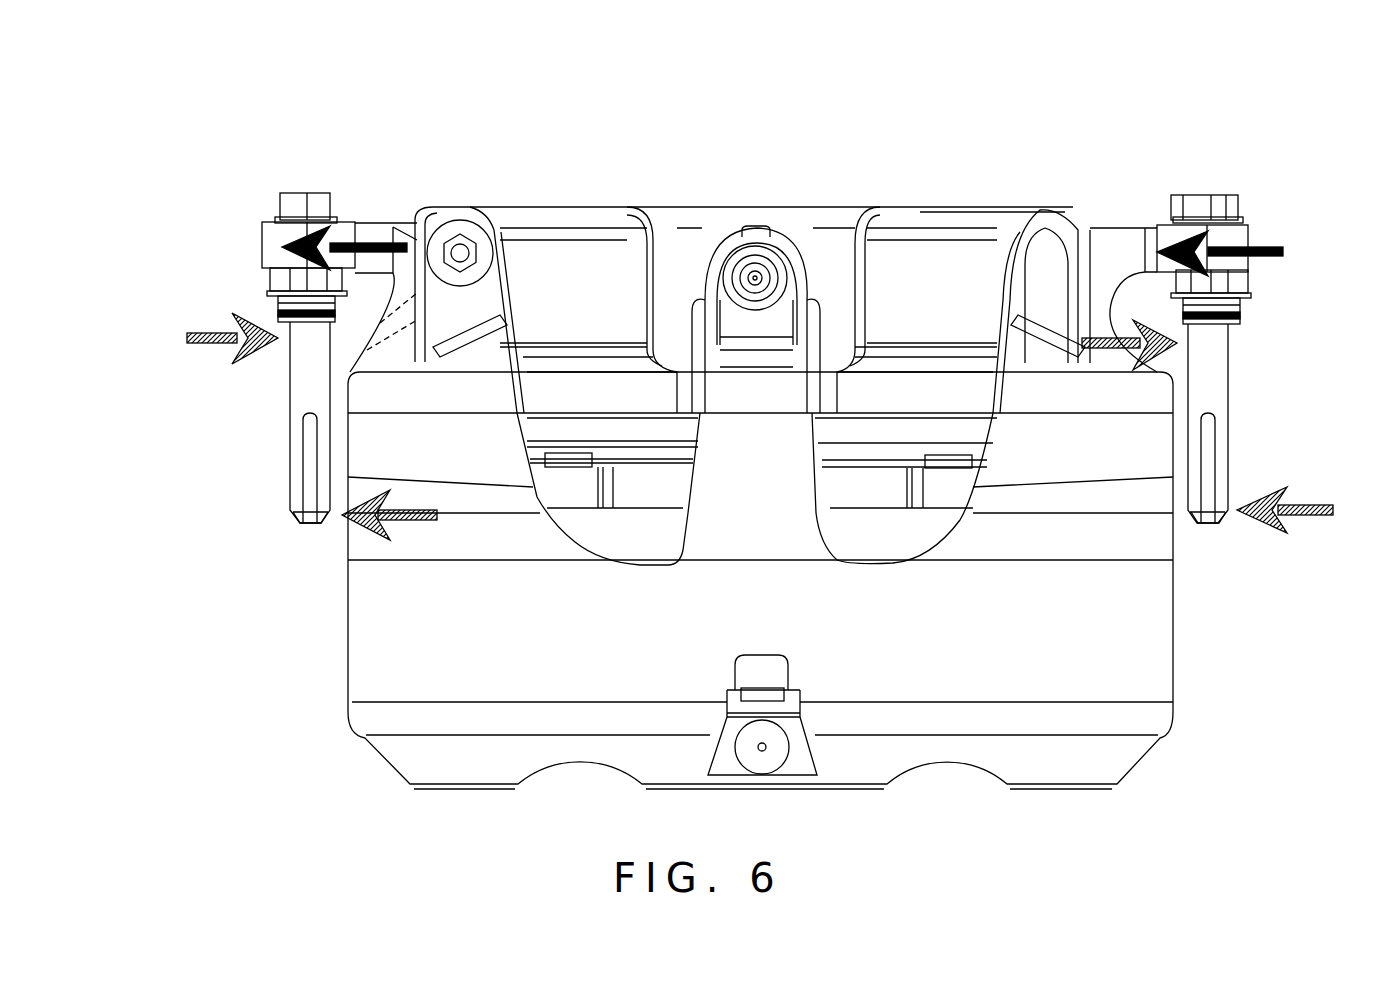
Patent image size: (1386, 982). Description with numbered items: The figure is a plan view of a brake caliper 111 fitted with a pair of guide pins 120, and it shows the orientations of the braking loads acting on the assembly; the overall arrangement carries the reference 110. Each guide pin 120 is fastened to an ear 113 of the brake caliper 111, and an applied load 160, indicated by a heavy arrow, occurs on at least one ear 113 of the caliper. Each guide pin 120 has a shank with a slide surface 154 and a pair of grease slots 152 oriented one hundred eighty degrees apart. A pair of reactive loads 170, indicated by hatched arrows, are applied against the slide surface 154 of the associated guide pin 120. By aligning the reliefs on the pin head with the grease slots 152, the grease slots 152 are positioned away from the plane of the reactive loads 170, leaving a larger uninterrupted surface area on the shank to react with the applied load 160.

The housing assembly 110 is at (968, 112).
The brake caliper 111 is at (367, 610).
The ear 113 is at (260, 233).
The guide pin 120 is at (270, 402).
The grease slot 152 is at (312, 503).
The slide surface 154 is at (293, 450).
The applied load 160 is at (350, 238).
The reactive load 170 is at (233, 330).